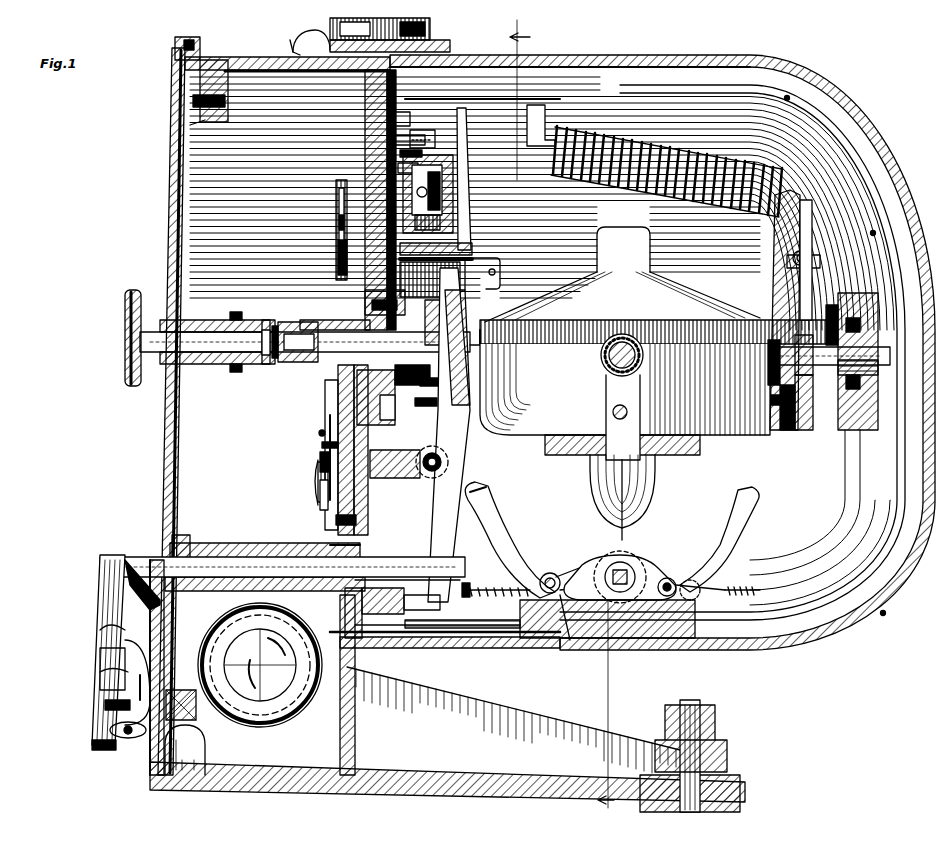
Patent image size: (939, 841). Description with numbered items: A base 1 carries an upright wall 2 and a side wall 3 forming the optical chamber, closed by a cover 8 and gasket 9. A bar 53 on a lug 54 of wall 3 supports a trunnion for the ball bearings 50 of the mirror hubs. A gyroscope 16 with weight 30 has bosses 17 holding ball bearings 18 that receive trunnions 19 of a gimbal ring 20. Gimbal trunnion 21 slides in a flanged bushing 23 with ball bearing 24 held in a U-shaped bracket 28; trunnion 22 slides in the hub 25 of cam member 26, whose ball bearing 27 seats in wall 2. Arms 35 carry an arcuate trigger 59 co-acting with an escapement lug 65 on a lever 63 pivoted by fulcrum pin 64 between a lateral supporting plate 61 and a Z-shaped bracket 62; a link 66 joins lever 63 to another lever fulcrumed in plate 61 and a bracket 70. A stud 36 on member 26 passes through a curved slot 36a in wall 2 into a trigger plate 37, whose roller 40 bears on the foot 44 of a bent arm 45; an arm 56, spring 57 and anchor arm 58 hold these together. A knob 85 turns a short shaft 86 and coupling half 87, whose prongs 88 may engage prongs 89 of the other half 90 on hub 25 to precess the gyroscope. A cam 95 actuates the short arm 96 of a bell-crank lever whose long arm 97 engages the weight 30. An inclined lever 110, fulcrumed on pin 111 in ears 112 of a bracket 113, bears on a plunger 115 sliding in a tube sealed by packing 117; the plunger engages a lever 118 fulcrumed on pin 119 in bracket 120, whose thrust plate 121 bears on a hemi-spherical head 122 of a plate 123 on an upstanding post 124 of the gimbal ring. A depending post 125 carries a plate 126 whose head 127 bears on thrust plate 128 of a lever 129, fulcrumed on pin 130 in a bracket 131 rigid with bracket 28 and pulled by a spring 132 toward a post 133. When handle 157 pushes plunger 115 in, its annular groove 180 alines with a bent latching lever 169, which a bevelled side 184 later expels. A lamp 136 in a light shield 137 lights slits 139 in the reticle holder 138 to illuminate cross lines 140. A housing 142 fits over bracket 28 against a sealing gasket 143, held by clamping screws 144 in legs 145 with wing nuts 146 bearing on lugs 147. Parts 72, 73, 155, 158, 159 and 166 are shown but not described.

The base 1 is at (546, 778).
The wall 2 is at (355, 705).
The wall 3 is at (240, 63).
The cover 8 is at (174, 180).
The gasket 9 is at (178, 55).
The gyroscope 16 is at (690, 298).
The bosses 17 is at (604, 350).
The ball bearings 18 is at (604, 372).
The trunnions 19 is at (602, 362).
The gimbal ring 20 is at (812, 398).
The trunnion 21 is at (880, 352).
The trunnion 22 is at (337, 370).
The flanged bushing 23 is at (878, 375).
The ball bearing 24 is at (840, 325).
The elongated tubular hub 25 is at (330, 325).
The cam cylinder 26 is at (473, 250).
The ball bearing 27 is at (365, 318).
The U-shaped bracket 28 is at (622, 74).
The weight 30 is at (650, 477).
The arms 35 is at (468, 178).
The stud 36 is at (385, 420).
The curved slot 36a is at (320, 460).
The trigger plate 37 is at (328, 418).
The roller 40 is at (334, 520).
The foot 44 is at (322, 444).
The bent arm 45 is at (330, 395).
The ball bearings 50 is at (350, 257).
The bar 53 is at (200, 126).
The lug 54 is at (213, 62).
The arm 56 is at (320, 492).
The spring 57 is at (316, 466).
The anchor arm 58 is at (320, 432).
The arcuate trigger 59 is at (470, 100).
The lateral supporting plate 61 is at (398, 154).
The Z-shaped bracket 62 is at (456, 160).
The lever 63 is at (345, 199).
The fulcrum pin 64 is at (393, 139).
The escapement lug 65 is at (428, 128).
The link 66 is at (388, 119).
The bracket 70 is at (353, 223).
The nut 72 is at (396, 168).
The bolt 73 is at (445, 198).
The knob 85 is at (128, 296).
The short shaft 86 is at (212, 353).
The coupling half 87 is at (248, 318).
The prongs 88 is at (266, 318).
The prongs 89 is at (285, 360).
The coupling half 90 is at (300, 320).
The cam 95 is at (626, 566).
The short arm 96 is at (560, 574).
The long arm 97 is at (488, 514).
The inclined lever 110 is at (100, 565).
The pin 111 is at (112, 625).
The spaced ears 112 is at (100, 642).
The bracket 113 is at (105, 700).
The plunger 115 is at (155, 560).
The packing 117 is at (185, 535).
The lever 118 is at (447, 500).
The pin 119 is at (445, 466).
The bracket 120 is at (395, 474).
The thrust plate 121 is at (484, 342).
The hemi-spherical head 122 is at (484, 354).
The plate 123 is at (435, 322).
The upstanding post 124 is at (466, 268).
The depending post 125 is at (806, 430).
The plate 126 is at (790, 430).
The hemi-spherical head 127 is at (806, 342).
The thrust plate 128 is at (790, 370).
The lever 129 is at (782, 296).
The pin 130 is at (808, 258).
The bracket 131 is at (812, 272).
The spring 132 is at (660, 185).
The post 133 is at (549, 108).
The electric bulb lamp 136 is at (148, 748).
The light shield 137 is at (220, 720).
The reticle holder 138 is at (296, 720).
The slits 139 is at (208, 624).
The reticle cross line 140 is at (273, 652).
The housing 142 is at (796, 82).
The sealing gasket 143 is at (452, 62).
The clamping screws 144 is at (428, 28).
The legs 145 is at (428, 45).
The wing nuts 146 is at (302, 40).
The lugs 147 is at (364, 78).
The roller 155 is at (108, 722).
The handle 157 is at (180, 690).
The arm 158 is at (125, 680).
The pin 159 is at (120, 690).
The plate 166 is at (225, 548).
The bent latching lever 169 is at (400, 606).
The annular groove 180 is at (345, 548).
The bevelled side 184 is at (365, 566).